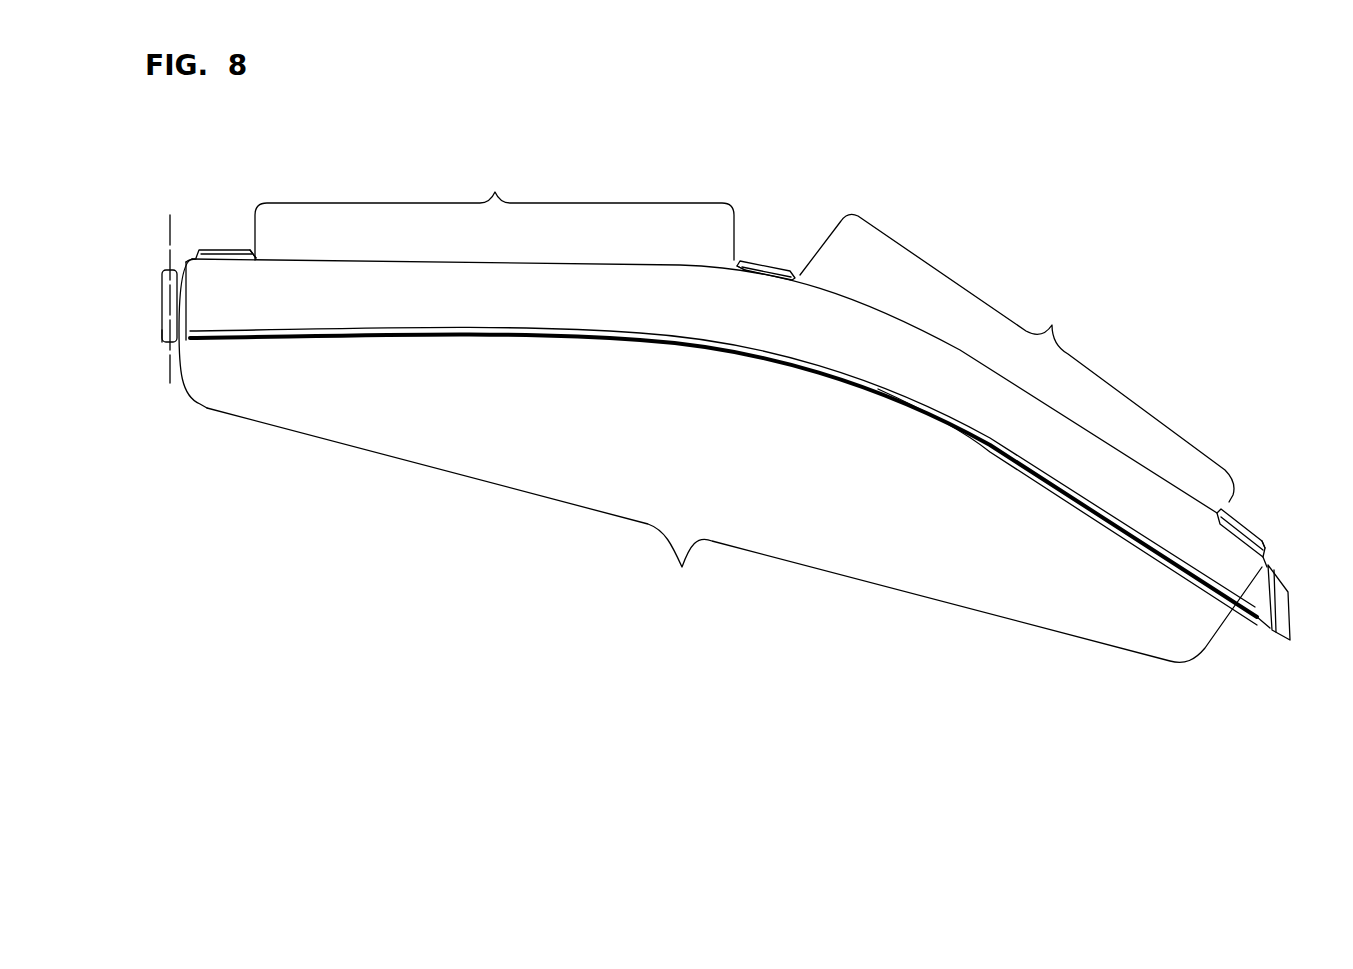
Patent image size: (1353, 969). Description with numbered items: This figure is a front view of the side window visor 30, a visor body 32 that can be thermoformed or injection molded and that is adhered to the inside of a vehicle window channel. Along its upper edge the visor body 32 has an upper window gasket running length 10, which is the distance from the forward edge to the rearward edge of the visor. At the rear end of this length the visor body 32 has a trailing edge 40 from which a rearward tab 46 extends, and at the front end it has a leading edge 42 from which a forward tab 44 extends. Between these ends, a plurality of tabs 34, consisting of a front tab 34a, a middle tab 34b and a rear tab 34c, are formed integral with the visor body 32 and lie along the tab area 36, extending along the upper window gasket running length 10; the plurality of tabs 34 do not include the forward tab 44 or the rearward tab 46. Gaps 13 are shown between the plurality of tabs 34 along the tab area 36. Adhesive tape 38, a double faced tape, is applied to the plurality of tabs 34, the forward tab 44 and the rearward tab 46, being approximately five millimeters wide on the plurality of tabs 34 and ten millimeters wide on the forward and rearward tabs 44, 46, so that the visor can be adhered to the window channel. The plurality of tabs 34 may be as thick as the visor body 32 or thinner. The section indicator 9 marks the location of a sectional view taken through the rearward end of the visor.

The side window visor 30 is at (1082, 190).
The upper window gasket running length 10 is at (734, 535).
The gaps 13 is at (744, 331).
The visor body 32 is at (753, 323).
The plurality of tabs 34 is at (214, 240).
The front tab 34a is at (1228, 508).
The middle tab 34b is at (795, 263).
The rear tab 34c is at (197, 248).
The tab area 36 is at (503, 257).
The adhesive tape 38 is at (240, 252).
The trailing edge 40 is at (191, 302).
The leading edge 42 is at (1263, 618).
The forward tab 44 is at (1293, 653).
The rearward tab 46 is at (155, 287).
The section line 9- 9 is at (167, 232).